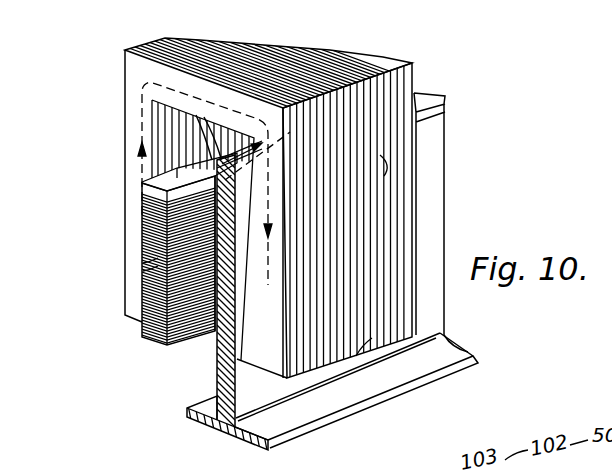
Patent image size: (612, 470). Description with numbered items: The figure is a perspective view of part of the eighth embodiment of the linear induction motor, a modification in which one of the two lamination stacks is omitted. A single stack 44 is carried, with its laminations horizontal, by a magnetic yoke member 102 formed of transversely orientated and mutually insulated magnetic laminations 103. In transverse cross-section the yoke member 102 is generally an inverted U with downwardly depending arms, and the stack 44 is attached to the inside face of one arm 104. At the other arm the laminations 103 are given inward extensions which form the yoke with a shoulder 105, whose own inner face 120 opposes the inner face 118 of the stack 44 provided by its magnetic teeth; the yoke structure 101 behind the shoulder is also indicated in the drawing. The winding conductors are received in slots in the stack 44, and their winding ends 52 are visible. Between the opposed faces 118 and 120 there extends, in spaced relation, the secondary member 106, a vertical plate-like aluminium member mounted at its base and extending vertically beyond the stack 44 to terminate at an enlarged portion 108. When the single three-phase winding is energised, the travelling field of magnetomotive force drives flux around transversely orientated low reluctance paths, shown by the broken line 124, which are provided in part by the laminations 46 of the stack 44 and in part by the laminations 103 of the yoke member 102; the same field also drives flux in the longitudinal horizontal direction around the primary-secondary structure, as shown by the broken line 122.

The stack 44 is at (142, 225).
The laminations 46 is at (143, 271).
The winding ends 52 is at (200, 128).
The back yoke 101 is at (424, 79).
The magnetic yoke member 102 is at (377, 63).
The magnetic laminations 103 is at (372, 338).
The arm 104 is at (142, 181).
The shoulder 105 is at (263, 207).
The secondary member 106 is at (215, 434).
The enlarged portion 108 is at (222, 167).
The inner face 118 is at (212, 330).
The inner face 120 is at (243, 352).
The longitudinally orientated flux path 122 is at (327, 189).
The transversely orientated flux path 124 is at (267, 282).